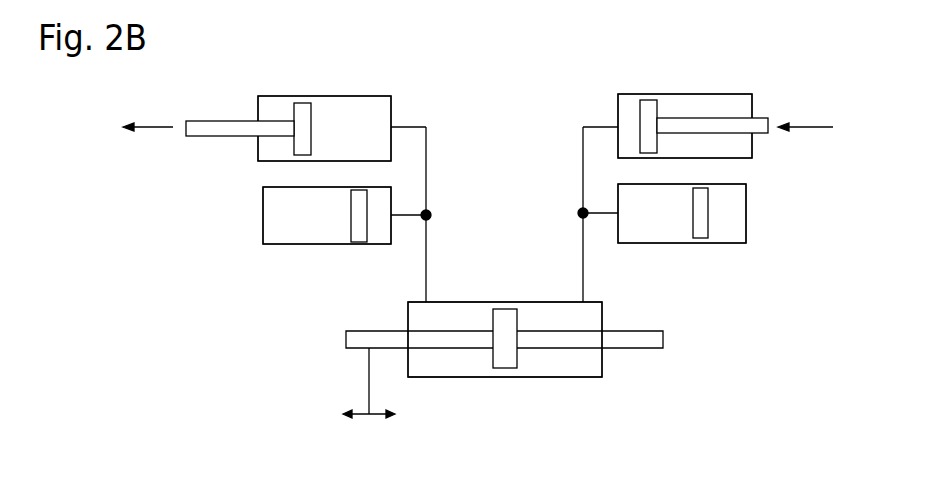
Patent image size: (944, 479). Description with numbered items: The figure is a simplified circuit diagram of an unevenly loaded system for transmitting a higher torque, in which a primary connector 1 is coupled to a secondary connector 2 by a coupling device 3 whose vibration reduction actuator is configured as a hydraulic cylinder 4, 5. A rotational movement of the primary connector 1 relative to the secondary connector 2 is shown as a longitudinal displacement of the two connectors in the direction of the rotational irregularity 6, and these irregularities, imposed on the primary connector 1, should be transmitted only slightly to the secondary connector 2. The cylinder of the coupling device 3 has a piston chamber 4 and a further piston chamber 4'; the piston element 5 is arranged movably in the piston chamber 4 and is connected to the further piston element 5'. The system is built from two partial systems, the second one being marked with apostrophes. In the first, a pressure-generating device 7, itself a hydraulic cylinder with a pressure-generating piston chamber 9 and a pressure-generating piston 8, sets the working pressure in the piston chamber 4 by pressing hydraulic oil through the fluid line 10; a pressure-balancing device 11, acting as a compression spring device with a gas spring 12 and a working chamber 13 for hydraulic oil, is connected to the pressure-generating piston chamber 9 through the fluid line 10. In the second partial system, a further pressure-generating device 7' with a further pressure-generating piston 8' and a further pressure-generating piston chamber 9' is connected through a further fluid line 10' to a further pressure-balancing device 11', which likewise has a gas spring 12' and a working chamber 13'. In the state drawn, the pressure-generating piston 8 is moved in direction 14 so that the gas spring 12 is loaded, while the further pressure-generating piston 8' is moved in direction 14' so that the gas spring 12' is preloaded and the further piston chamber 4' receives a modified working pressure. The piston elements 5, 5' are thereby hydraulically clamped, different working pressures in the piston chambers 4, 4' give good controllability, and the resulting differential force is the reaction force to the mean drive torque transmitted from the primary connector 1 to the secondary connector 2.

The primary connector 1 is at (367, 380).
The secondary connector 2 is at (505, 302).
The coupling device 3 is at (612, 301).
The piston chamber 4 is at (553, 373).
The further piston chamber 4' is at (456, 373).
The piston element 5 is at (621, 345).
The further piston element 5' is at (387, 345).
The rotational irregularity 6 is at (375, 420).
The pressure-generating device 7 is at (706, 94).
The further pressure-generating device 7' is at (302, 93).
The pressure-generating piston 8 is at (736, 156).
The further pressure-generating piston 8' is at (231, 160).
The pressure-generating piston chamber 9 is at (685, 95).
The further pressure-generating piston chamber 9' is at (324, 98).
The fluid line 10 is at (586, 181).
The further fluid line 10' is at (424, 181).
The pressure-balancing device 11 is at (723, 213).
The further pressure-balancing device 11' is at (288, 215).
The gas spring 12 is at (695, 237).
The gas spring 12' is at (322, 246).
The working chamber 13 is at (688, 239).
The working chamber 13' is at (367, 247).
The direction 14 is at (815, 96).
The direction 14' is at (160, 97).